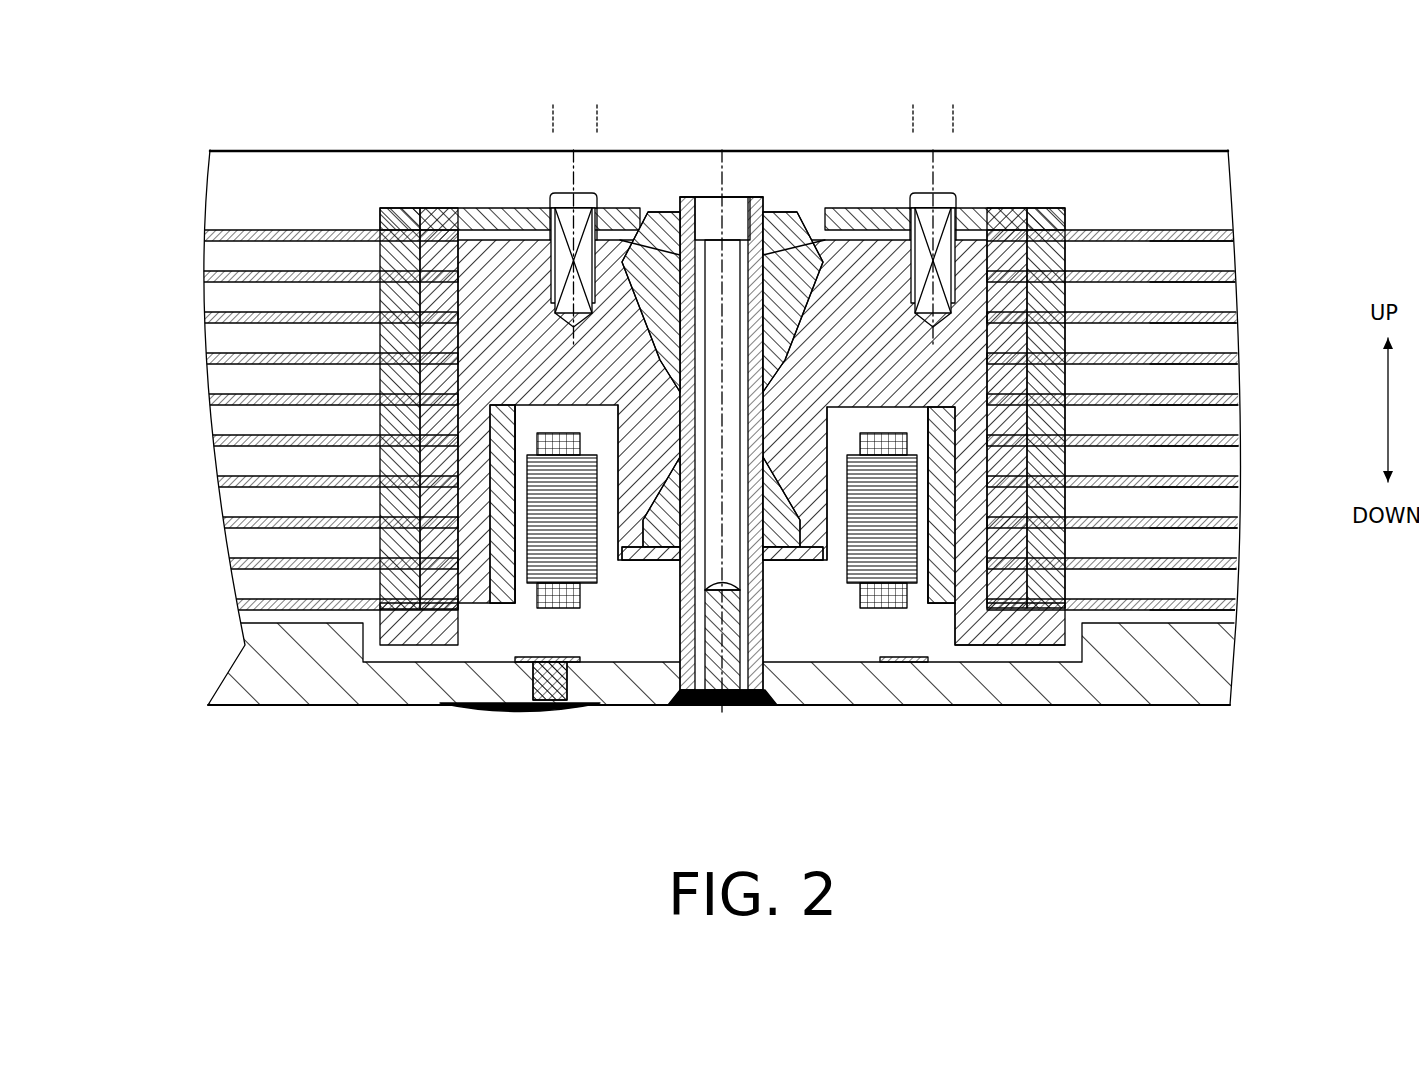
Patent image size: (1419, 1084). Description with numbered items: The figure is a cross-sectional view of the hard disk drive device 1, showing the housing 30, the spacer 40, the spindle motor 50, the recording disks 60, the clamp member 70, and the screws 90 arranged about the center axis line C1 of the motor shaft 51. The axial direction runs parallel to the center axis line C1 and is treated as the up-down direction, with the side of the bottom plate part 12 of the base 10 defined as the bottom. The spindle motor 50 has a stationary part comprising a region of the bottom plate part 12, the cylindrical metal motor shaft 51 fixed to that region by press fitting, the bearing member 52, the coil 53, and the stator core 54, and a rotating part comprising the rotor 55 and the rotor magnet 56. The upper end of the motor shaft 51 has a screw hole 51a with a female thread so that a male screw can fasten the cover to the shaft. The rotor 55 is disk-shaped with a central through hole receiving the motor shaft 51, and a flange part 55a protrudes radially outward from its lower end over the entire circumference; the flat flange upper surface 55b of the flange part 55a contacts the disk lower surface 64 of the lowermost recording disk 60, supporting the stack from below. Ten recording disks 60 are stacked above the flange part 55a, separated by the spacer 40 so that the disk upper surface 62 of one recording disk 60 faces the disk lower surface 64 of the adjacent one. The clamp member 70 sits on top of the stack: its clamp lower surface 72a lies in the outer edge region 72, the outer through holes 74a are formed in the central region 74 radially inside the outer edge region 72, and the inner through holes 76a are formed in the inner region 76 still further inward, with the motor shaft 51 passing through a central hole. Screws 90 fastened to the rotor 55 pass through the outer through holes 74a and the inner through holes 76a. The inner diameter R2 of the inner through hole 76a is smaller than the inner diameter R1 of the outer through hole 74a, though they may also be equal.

The hard disk drive device 1 is at (1224, 78).
The base 10 is at (730, 703).
The bottom plate part 12 is at (1125, 690).
The housing 30 is at (1212, 708).
The spacer 40 is at (1070, 254).
The spindle motor 50 is at (902, 630).
The motor shaft 51 is at (722, 424).
The screw hole 51a is at (712, 196).
The bearing member 52 is at (768, 212).
The coil 53 is at (556, 610).
The stator core 54 is at (612, 572).
The rotor 55 is at (538, 412).
The flange part 55a is at (986, 652).
The flange upper surface 55b is at (1020, 606).
The rotor magnet 56 is at (545, 692).
The recording disk 60 is at (228, 226).
The disk upper surface 62 is at (1233, 235).
The disk lower surface 64 is at (1232, 253).
The clamp member 70 is at (373, 222).
The outer edge region 72 is at (1065, 232).
The clamp lower surface 72a is at (1066, 218).
The central region 74 is at (756, 192).
The outer through hole 74a is at (978, 228).
The inner region 76 is at (679, 192).
The inner through hole 76a is at (558, 248).
The screw 90 is at (630, 228).
The center axis line C1 is at (737, 150).
The inner diameter of outer through hole R1 is at (953, 118).
The inner diameter of inner through hole R2 is at (597, 118).